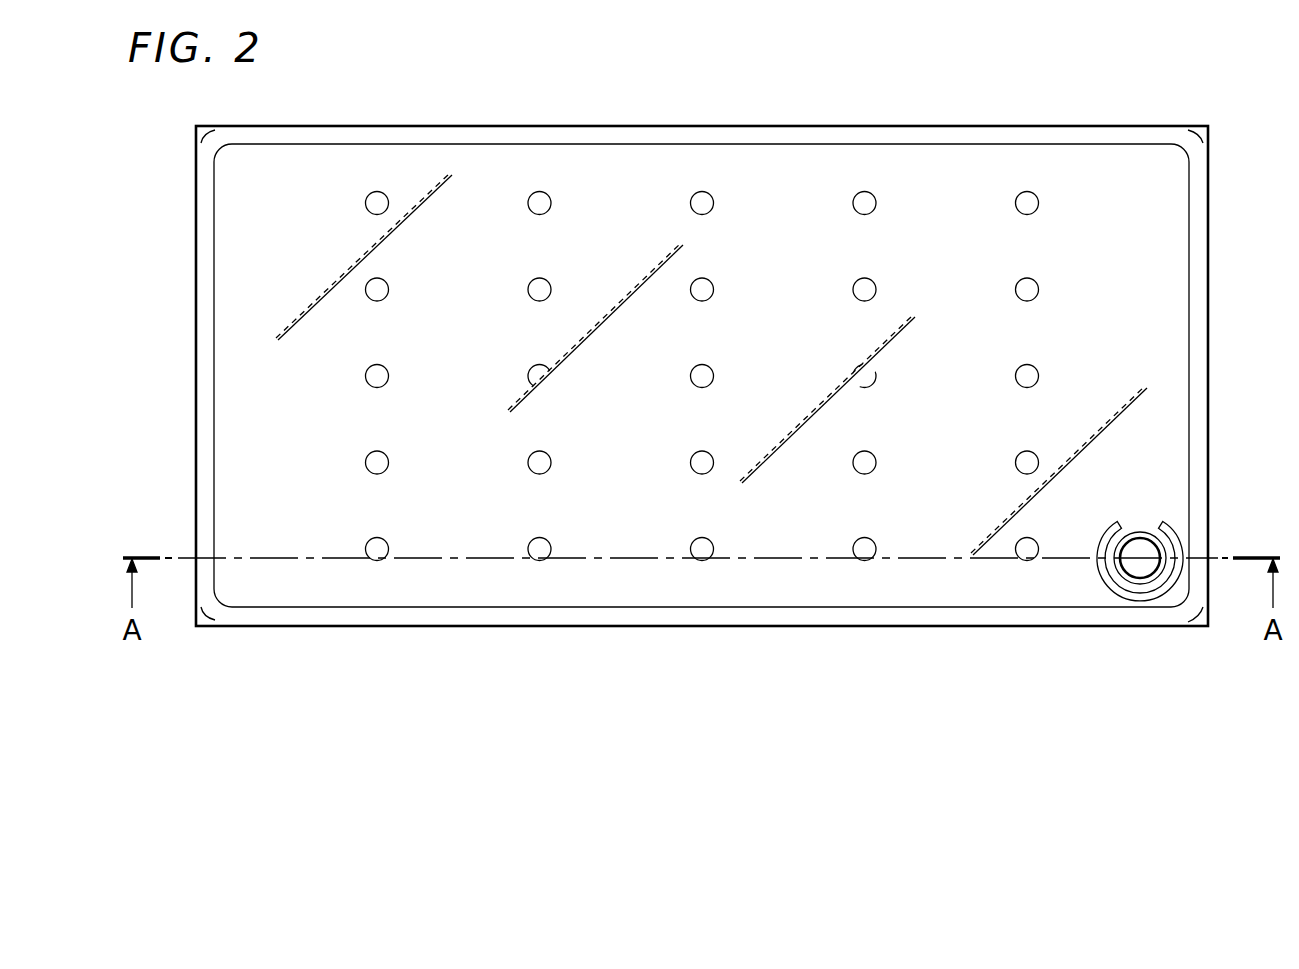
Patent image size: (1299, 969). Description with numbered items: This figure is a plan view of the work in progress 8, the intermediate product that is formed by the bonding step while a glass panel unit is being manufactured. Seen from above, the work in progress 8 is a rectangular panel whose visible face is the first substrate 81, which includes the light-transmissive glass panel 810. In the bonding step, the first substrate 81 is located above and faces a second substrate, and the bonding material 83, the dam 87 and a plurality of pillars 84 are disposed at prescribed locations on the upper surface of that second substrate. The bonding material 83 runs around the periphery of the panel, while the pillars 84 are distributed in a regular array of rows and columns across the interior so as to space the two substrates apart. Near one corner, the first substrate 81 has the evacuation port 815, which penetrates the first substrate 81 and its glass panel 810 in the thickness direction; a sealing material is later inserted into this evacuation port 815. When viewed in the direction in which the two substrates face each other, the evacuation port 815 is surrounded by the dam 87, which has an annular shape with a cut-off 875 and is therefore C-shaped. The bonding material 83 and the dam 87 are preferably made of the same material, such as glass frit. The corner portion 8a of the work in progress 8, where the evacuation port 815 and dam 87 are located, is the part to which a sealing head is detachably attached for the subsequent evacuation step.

The work in progress 8 is at (921, 126).
The corner portion 8a is at (1182, 525).
The first substrate 81 is at (312, 172).
The glass panel 810 is at (497, 180).
The bonding material 83 is at (1198, 290).
The pillars 84 is at (543, 205).
The dam 87 is at (1108, 575).
The evacuation port 815 is at (1137, 550).
The cut-off 875 is at (1141, 530).